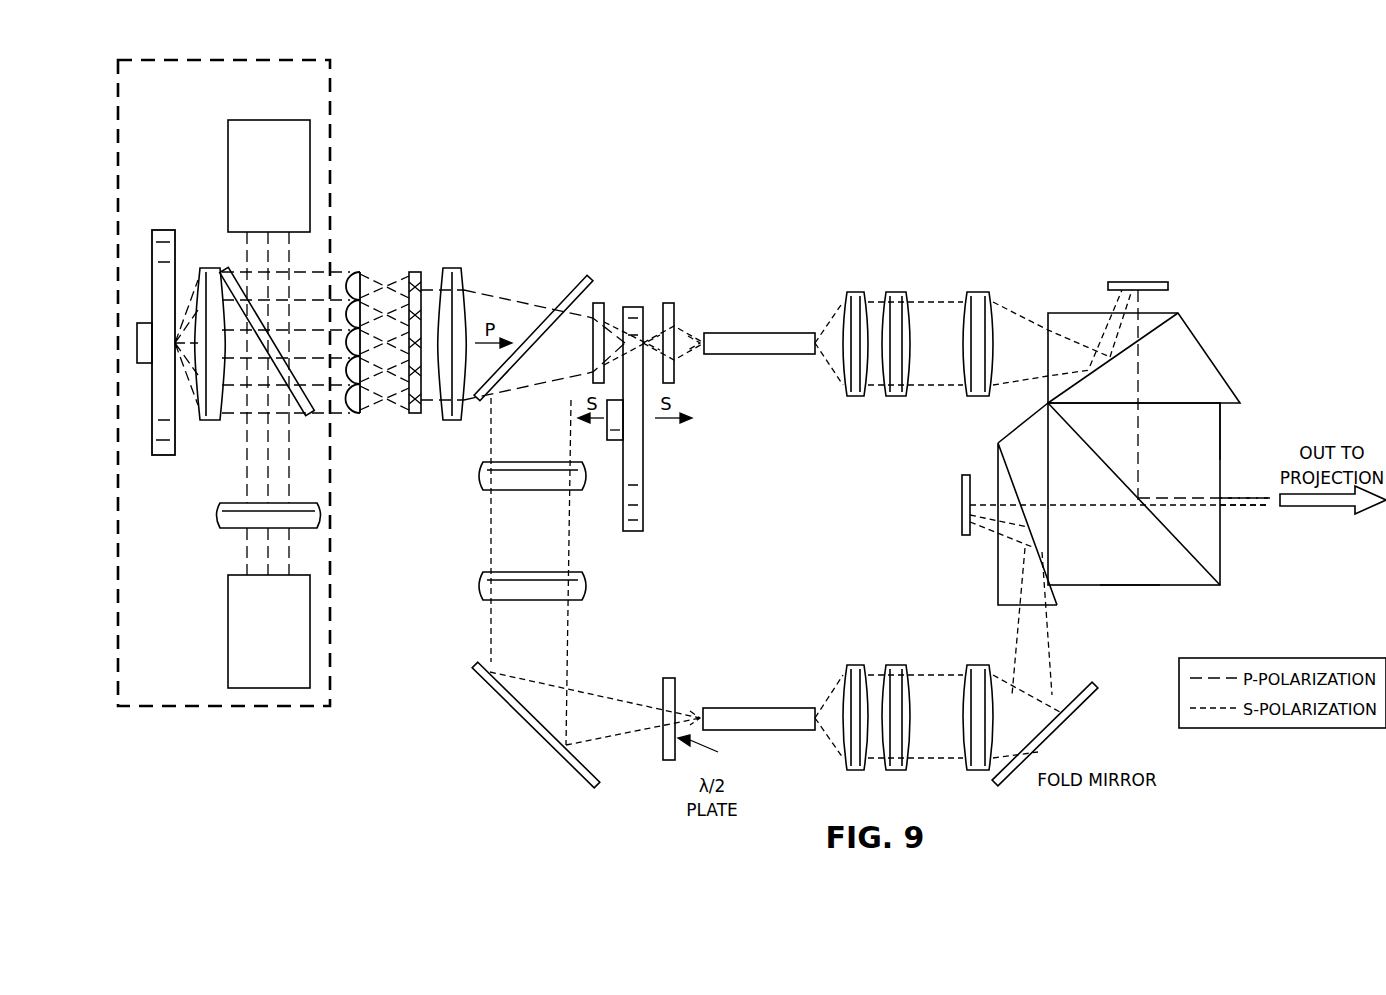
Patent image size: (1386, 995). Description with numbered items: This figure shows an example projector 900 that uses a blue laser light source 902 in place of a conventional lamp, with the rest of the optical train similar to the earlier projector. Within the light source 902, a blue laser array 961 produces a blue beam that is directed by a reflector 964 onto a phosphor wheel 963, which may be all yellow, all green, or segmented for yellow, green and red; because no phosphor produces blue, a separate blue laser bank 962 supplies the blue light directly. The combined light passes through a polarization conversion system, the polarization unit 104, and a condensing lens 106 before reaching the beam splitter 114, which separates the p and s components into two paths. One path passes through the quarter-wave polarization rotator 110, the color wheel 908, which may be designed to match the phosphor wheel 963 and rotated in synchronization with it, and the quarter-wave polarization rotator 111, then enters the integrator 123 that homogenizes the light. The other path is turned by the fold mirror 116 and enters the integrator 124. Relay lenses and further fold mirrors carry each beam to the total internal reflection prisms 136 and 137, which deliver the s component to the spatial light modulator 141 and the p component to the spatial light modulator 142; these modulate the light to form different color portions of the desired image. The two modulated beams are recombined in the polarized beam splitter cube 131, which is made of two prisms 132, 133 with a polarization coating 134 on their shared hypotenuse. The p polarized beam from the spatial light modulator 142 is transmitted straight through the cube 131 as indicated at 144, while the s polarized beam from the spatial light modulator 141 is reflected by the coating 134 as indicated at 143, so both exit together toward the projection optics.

The projector 900 is at (1133, 160).
The blue laser light source 902 is at (222, 706).
The blue laser array 961 is at (228, 628).
The blue laser bank 962 is at (268, 120).
The phosphor wheel 963 is at (165, 230).
The reflector 964 is at (222, 270).
The polarization unit 104 is at (414, 420).
The condensing lens 106 is at (450, 268).
The beam splitter 114 is at (558, 290).
The polarization rotator 110 is at (600, 303).
The polarization rotator 111 is at (670, 303).
The color wheel 908 is at (643, 453).
The integrator 123 is at (760, 333).
The integrator 124 is at (758, 730).
The fold mirror 116 is at (530, 732).
The spatial light modulator 141 is at (1143, 282).
The spatial light modulator 142 is at (962, 495).
The total internal reflection prism 136 is at (1162, 325).
The total internal reflection prism 137 is at (1000, 466).
The polarized beam splitter cube 131 is at (1182, 592).
The prism 132 is at (1135, 590).
The prism 133 is at (1222, 435).
The polarization coating 134 is at (1098, 452).
The reflected s polarized light beam 143 is at (1240, 498).
The transmitted p polarized light beam 144 is at (1240, 508).